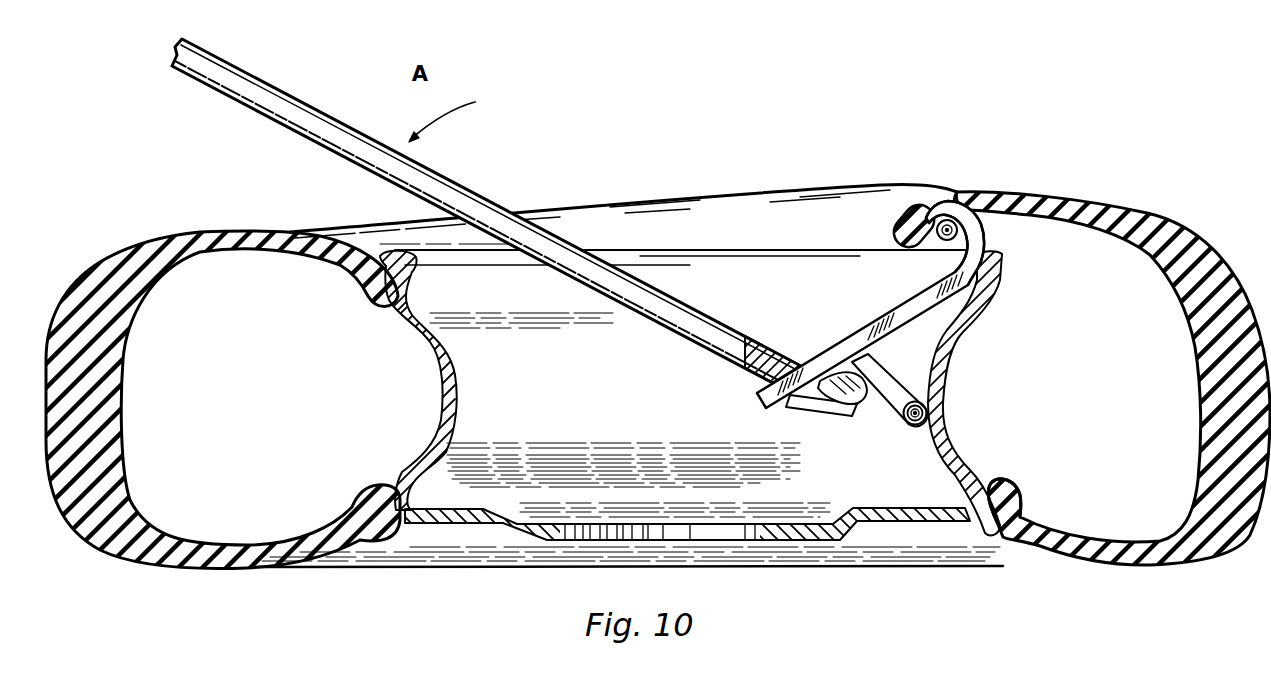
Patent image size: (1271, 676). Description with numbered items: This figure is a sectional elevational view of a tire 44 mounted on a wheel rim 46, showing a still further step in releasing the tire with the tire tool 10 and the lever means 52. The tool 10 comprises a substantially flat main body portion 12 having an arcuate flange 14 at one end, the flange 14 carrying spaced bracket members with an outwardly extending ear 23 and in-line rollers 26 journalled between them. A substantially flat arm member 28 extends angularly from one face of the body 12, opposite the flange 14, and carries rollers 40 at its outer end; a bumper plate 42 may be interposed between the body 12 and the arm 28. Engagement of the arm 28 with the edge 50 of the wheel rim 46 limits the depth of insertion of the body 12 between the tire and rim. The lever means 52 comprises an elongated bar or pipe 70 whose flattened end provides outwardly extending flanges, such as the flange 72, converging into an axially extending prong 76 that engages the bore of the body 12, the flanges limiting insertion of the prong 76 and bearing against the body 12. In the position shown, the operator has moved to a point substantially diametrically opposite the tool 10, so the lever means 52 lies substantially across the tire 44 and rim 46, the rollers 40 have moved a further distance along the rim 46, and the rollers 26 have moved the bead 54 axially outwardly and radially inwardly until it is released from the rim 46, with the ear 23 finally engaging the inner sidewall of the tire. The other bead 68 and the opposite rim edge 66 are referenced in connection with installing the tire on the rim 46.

The tire tool 10 is at (877, 305).
The main body portion 12 is at (912, 326).
The arcuate flange 14 is at (980, 240).
The ear 23 is at (965, 195).
The rollers 26 is at (922, 215).
The arm member 28 is at (893, 405).
The rollers 40 is at (915, 430).
The bumper plate 42 is at (822, 364).
The tire 44 is at (1150, 218).
The wheel rim 46 is at (456, 380).
The edge of the wheel rim 50 is at (1010, 262).
The lever means 52 is at (256, 117).
The bead 54 is at (892, 246).
The edge of the rim 66 is at (1001, 540).
The bead 68 is at (1010, 480).
The elongated bar or pipe 70 is at (238, 68).
The flange 72 is at (766, 346).
The prong 76 is at (822, 410).